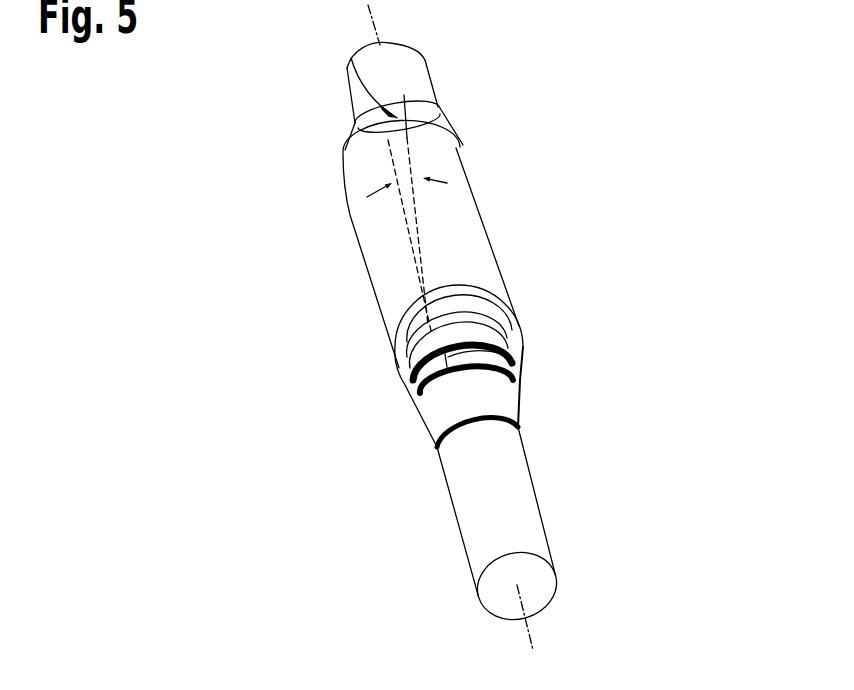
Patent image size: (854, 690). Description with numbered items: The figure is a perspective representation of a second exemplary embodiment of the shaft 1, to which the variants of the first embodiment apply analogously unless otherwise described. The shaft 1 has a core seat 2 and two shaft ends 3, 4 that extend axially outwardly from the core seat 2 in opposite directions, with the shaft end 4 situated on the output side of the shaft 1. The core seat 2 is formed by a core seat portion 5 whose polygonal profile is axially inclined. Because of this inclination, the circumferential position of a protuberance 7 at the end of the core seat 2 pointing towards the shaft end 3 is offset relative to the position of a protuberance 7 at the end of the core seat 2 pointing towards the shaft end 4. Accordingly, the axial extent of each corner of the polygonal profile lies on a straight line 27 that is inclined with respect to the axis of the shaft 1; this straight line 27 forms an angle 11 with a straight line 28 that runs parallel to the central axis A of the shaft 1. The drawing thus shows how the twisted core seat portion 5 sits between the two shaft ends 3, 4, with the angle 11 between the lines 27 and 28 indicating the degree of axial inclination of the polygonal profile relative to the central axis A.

The shaft 1 is at (666, 149).
The core seat 2 is at (372, 392).
The shaft end 3 is at (293, 70).
The shaft end 4 is at (392, 413).
The core seat portion 5 is at (495, 240).
The protuberance 7 is at (351, 58).
The angle 11 is at (450, 152).
The straight line 27 is at (440, 107).
The straight line 28 is at (513, 364).
The central axis A is at (532, 644).